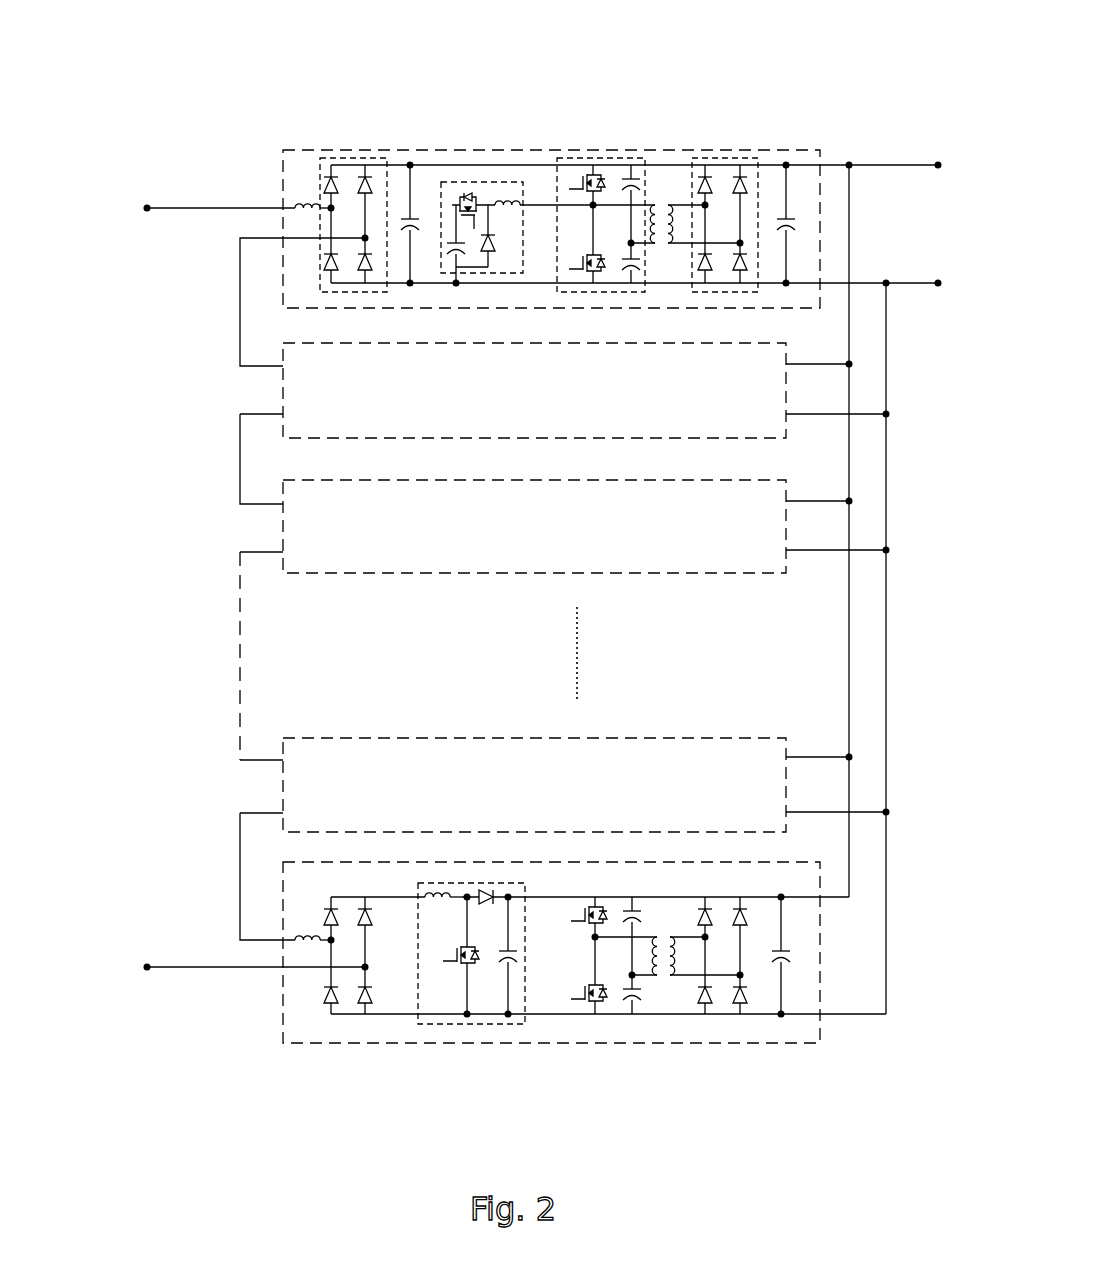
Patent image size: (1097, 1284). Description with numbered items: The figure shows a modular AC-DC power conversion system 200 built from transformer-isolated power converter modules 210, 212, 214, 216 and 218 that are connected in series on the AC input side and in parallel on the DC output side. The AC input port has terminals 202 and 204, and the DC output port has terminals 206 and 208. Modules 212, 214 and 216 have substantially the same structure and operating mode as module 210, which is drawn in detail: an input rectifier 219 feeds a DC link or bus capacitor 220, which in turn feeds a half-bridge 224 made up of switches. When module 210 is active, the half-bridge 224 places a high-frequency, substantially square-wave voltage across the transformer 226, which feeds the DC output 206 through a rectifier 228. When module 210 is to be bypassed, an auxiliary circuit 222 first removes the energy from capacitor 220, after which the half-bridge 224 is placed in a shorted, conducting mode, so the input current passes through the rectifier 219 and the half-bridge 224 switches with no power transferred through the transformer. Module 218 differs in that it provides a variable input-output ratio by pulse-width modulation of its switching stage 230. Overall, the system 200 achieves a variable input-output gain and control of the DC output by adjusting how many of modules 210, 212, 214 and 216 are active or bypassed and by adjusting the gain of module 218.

The power conversion system 200 is at (112, 80).
The AC input port terminal 202 is at (140, 232).
The AC input port terminal 204 is at (135, 942).
The DC output port terminal 206 is at (942, 148).
The DC output port terminal 208 is at (942, 305).
The power converter module 210 is at (272, 183).
The power converter module 212 is at (270, 386).
The power converter module 214 is at (270, 520).
The power converter module 216 is at (270, 781).
The power converter module 218 is at (270, 1030).
The input rectifier 219 is at (305, 175).
The DC link capacitor 220 is at (408, 190).
The auxiliary circuit 222 is at (476, 162).
The half-bridge 224 is at (571, 150).
The transformer 226 is at (663, 188).
The rectifier 228 is at (726, 150).
The switching stage 230 is at (450, 1043).